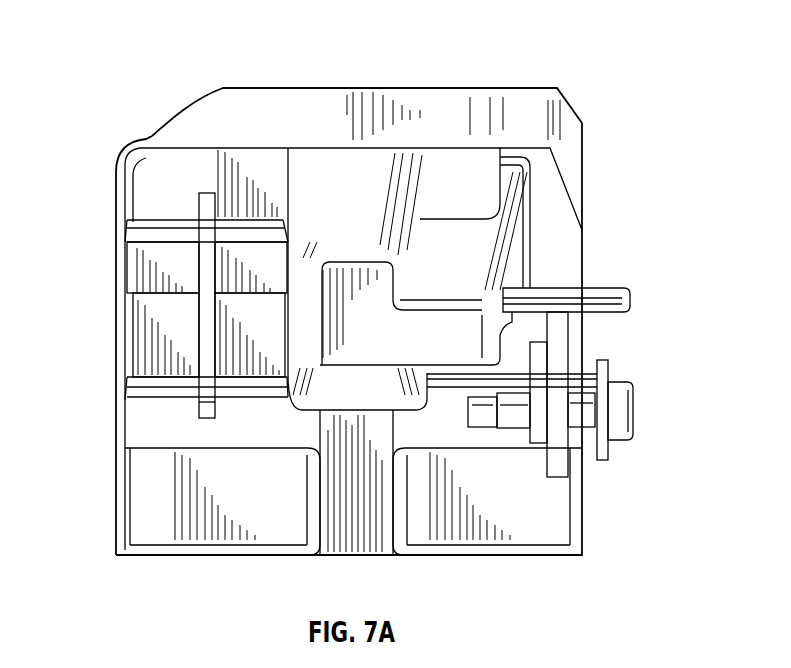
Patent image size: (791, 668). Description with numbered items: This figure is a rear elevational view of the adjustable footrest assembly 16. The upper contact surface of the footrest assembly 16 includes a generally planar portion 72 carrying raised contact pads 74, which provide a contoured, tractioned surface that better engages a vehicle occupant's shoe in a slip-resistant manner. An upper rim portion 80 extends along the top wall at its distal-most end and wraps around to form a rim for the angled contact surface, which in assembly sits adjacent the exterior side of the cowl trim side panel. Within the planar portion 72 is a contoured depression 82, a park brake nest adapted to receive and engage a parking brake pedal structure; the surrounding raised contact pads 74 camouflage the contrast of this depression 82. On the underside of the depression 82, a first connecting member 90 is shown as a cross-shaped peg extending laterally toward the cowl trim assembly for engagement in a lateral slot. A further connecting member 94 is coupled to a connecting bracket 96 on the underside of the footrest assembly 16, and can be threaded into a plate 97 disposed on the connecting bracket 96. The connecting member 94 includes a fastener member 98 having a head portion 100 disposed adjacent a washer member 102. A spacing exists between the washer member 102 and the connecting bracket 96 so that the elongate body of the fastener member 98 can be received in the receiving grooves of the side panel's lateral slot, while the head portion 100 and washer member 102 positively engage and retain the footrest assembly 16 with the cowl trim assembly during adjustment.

The footrest assembly 16 is at (137, 82).
The planar portion 72 is at (330, 535).
The raised contact pads 74 is at (148, 502).
The upper rim portion 80 is at (528, 104).
The contoured depression 82 is at (457, 253).
The first connecting member 90 is at (597, 288).
The connecting member 94 is at (635, 412).
The connecting bracket 96 is at (562, 372).
The plate 97 is at (540, 433).
The fastener member 98 is at (583, 420).
The head portion 100 is at (632, 433).
The washer member 102 is at (608, 362).